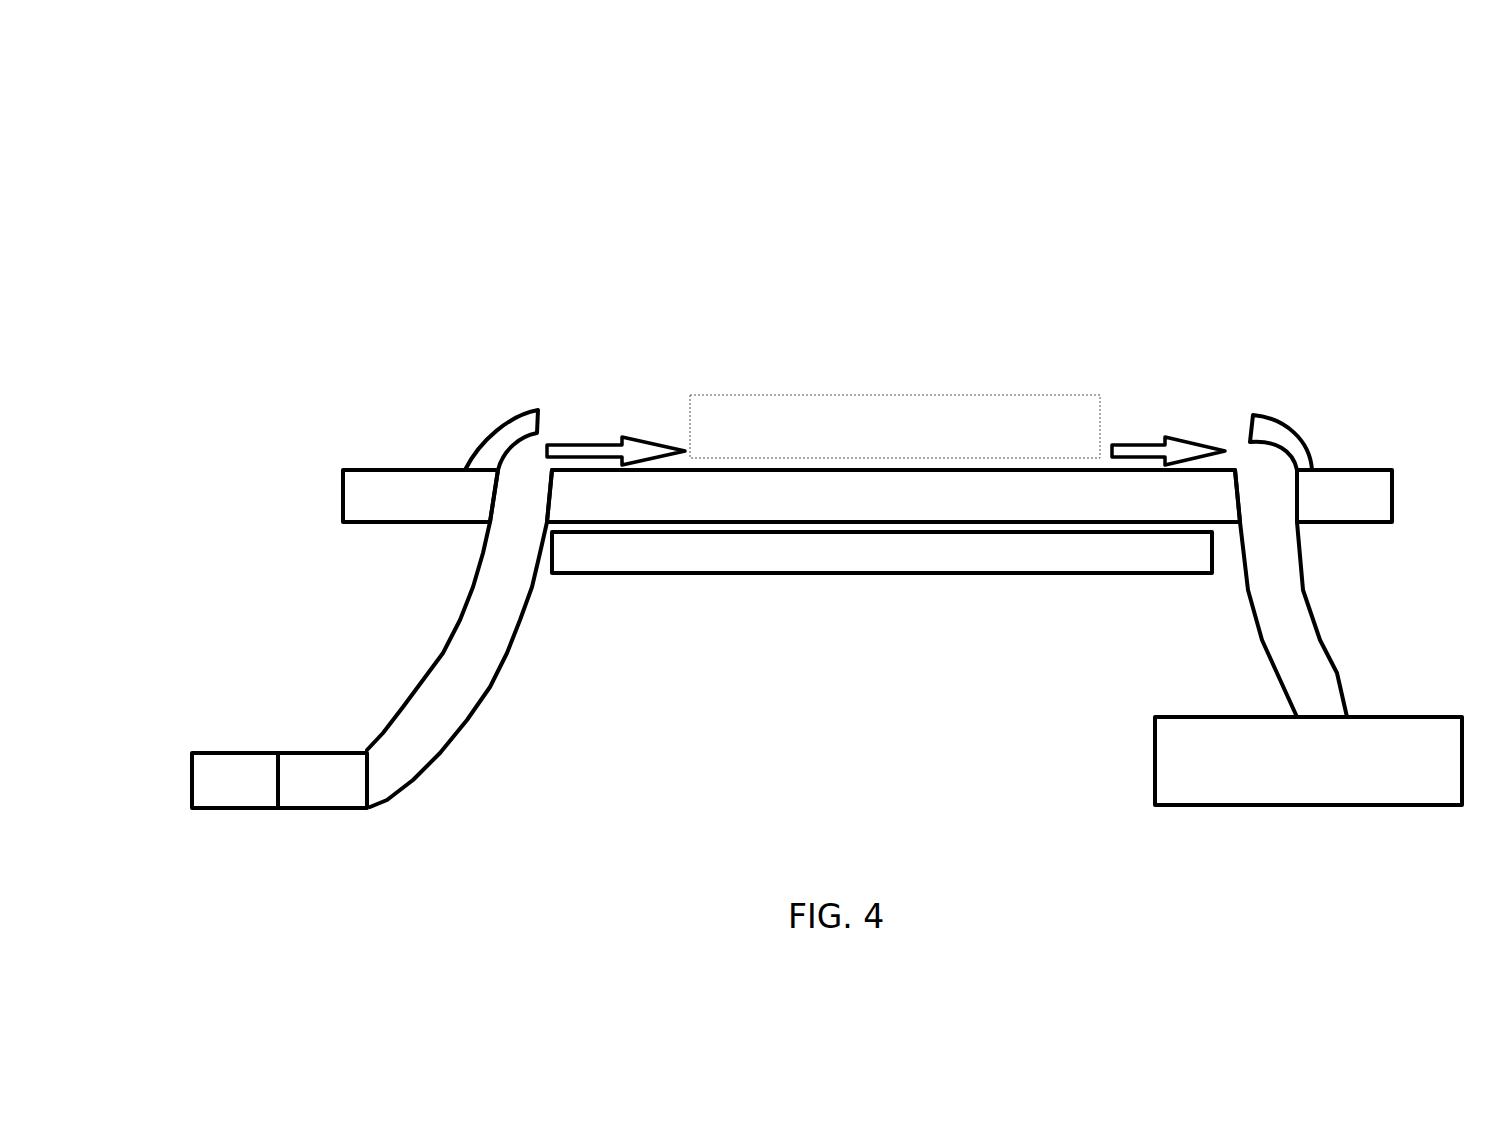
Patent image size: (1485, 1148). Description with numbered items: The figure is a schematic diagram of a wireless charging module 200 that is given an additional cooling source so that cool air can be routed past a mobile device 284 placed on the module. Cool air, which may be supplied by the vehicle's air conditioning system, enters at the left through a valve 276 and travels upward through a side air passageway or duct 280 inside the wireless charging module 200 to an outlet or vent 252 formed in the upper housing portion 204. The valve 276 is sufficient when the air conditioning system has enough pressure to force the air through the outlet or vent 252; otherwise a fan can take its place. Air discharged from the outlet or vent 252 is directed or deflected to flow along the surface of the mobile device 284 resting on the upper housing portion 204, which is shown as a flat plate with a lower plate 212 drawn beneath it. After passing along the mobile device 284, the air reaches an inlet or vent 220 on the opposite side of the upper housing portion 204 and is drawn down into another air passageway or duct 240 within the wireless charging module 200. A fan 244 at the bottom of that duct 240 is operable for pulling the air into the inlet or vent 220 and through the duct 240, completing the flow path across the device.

The wireless charging module 200 is at (255, 162).
The upper housing portion 204 is at (390, 470).
The substrate 212 is at (828, 573).
The inlet or vent 220 is at (1233, 430).
The air passageway or duct 240 is at (1273, 675).
The fan 244 is at (1313, 805).
The outlet or vent 252 is at (562, 425).
The valve 276 is at (312, 750).
The side air passageway or duct 280 is at (440, 657).
The mobile device 284 is at (870, 348).